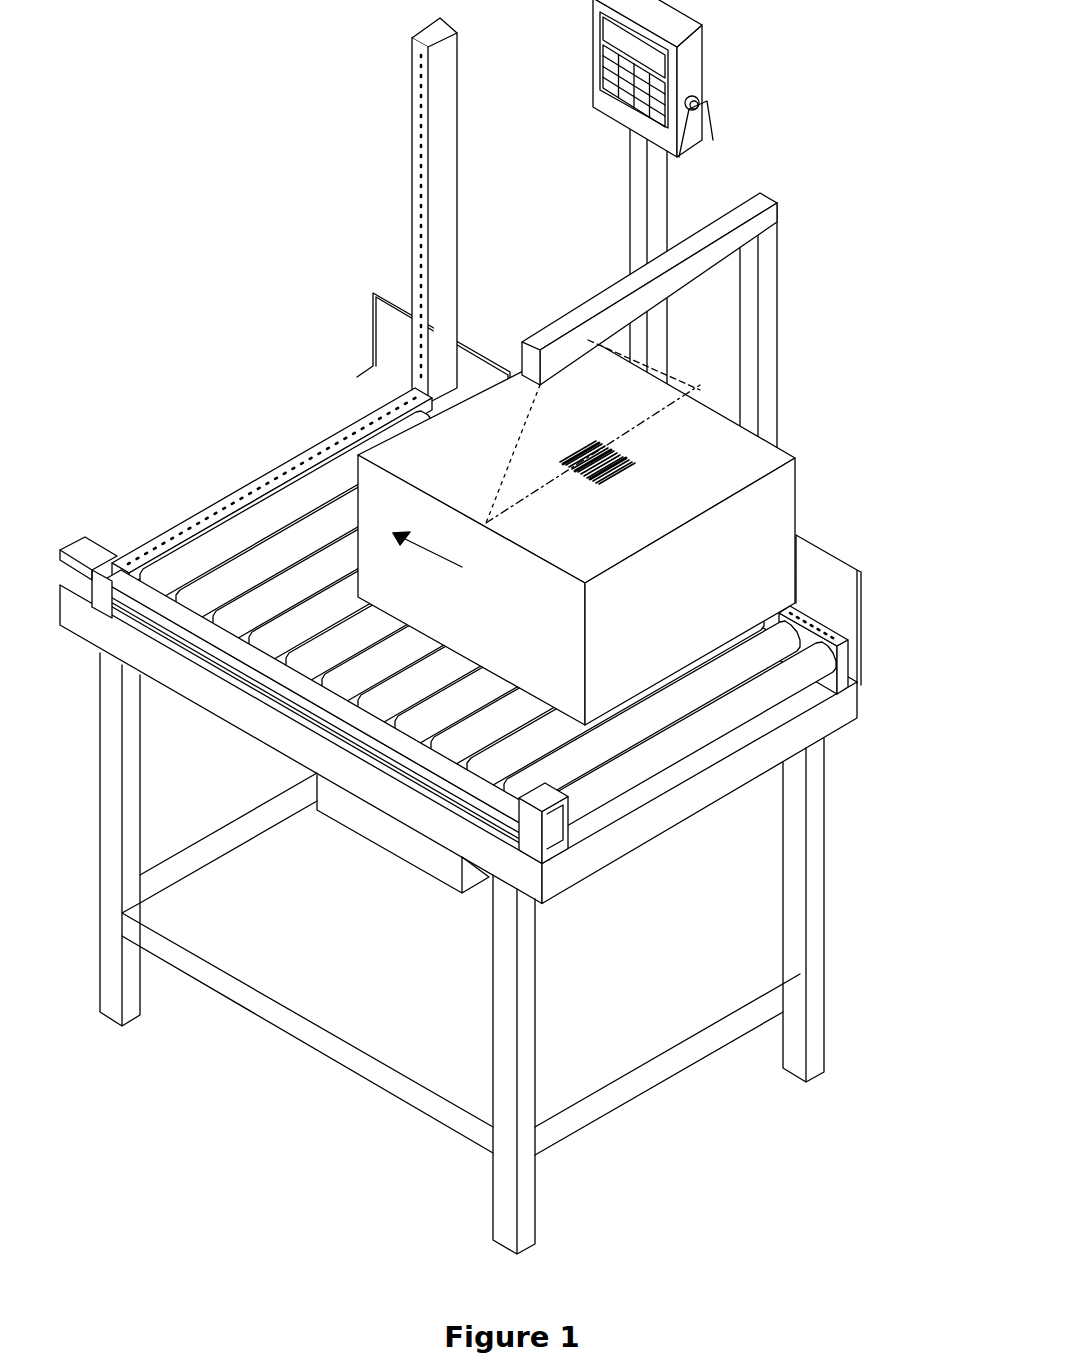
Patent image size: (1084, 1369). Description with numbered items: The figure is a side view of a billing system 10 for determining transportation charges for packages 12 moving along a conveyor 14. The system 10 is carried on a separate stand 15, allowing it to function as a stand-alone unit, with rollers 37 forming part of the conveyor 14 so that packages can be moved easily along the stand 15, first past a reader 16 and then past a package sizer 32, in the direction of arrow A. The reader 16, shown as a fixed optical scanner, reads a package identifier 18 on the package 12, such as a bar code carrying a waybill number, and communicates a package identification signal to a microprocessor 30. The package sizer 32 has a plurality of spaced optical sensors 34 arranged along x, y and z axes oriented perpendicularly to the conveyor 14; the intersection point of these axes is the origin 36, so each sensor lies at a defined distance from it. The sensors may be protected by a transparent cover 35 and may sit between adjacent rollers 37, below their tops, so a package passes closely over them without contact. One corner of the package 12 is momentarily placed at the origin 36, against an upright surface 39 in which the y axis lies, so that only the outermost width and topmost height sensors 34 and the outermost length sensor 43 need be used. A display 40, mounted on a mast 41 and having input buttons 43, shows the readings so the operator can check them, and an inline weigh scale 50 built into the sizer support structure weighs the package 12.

The billing system 10 is at (511, 627).
The package 12 is at (613, 531).
The conveyor 14 is at (822, 692).
The stand 15 is at (826, 845).
The reader 16 is at (546, 330).
The package identifier 18 is at (622, 462).
The microprocessor 30 is at (400, 843).
The package sizer 32 is at (311, 301).
The optical sensors 34 is at (418, 90).
The transparent cover 35 is at (115, 562).
The origin 36 is at (378, 374).
The rollers 37 is at (628, 772).
The upright surface 39 is at (850, 603).
The display 40 is at (648, 78).
The mast 41 is at (662, 178).
The input buttons 43 is at (605, 88).
The inline weigh scale 50 is at (248, 718).